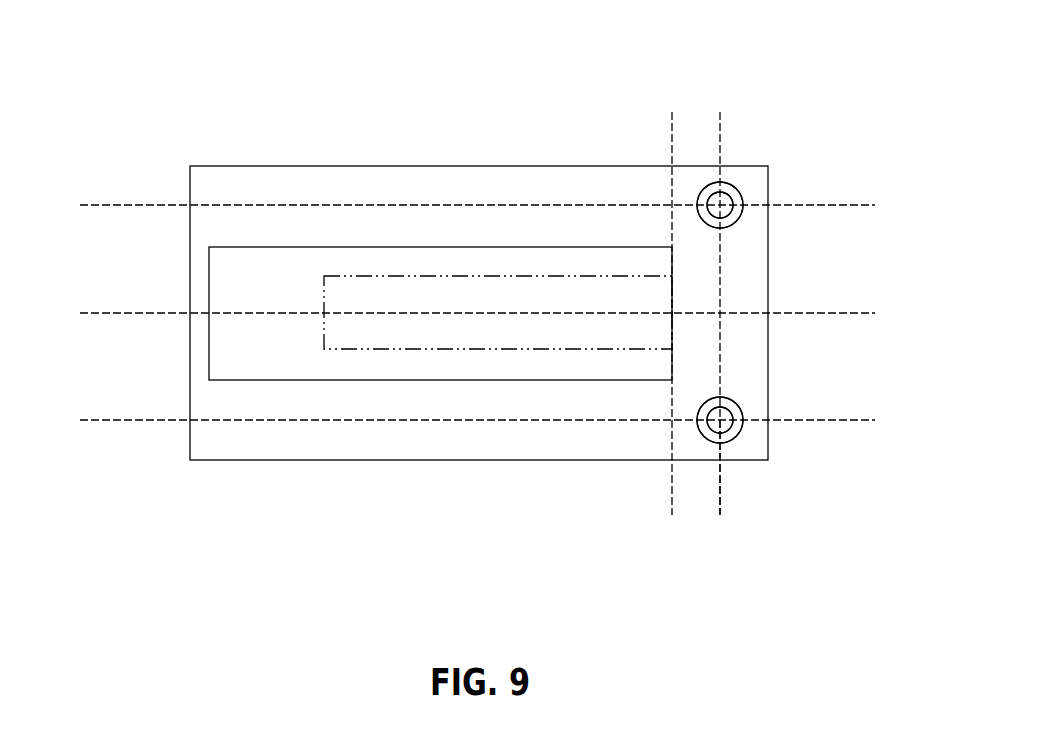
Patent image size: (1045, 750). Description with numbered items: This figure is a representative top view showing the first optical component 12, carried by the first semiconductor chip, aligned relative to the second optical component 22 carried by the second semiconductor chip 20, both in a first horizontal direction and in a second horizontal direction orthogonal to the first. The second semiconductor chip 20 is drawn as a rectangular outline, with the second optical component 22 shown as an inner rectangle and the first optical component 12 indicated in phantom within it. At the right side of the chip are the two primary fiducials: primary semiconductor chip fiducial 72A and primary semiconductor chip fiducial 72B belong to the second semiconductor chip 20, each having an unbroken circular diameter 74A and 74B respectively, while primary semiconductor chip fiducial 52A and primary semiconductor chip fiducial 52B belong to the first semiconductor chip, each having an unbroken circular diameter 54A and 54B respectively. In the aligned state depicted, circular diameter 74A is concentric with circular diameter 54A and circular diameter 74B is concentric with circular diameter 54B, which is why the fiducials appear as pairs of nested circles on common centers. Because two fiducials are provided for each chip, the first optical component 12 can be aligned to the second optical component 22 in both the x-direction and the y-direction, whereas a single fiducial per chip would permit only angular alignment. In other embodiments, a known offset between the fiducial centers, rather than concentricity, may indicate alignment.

The first optical component 12 is at (500, 276).
The second semiconductor chip 20 is at (538, 461).
The second optical component 22 is at (395, 381).
The primary semiconductor chip fiducial 52A is at (748, 229).
The primary semiconductor chip fiducial 52B is at (748, 444).
The unbroken circular diameter 54A is at (727, 194).
The unbroken circular diameter 54B is at (727, 408).
The primary semiconductor chip fiducial 72A is at (706, 158).
The primary semiconductor chip fiducial 72B is at (733, 457).
The unbroken circular diameter 74A is at (743, 202).
The unbroken circular diameter 74B is at (743, 417).